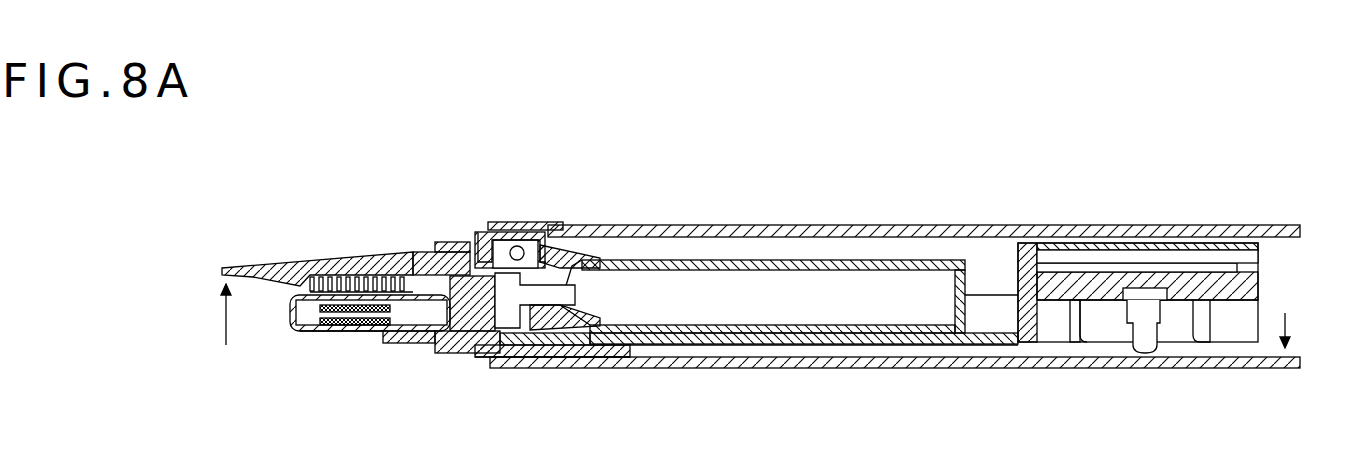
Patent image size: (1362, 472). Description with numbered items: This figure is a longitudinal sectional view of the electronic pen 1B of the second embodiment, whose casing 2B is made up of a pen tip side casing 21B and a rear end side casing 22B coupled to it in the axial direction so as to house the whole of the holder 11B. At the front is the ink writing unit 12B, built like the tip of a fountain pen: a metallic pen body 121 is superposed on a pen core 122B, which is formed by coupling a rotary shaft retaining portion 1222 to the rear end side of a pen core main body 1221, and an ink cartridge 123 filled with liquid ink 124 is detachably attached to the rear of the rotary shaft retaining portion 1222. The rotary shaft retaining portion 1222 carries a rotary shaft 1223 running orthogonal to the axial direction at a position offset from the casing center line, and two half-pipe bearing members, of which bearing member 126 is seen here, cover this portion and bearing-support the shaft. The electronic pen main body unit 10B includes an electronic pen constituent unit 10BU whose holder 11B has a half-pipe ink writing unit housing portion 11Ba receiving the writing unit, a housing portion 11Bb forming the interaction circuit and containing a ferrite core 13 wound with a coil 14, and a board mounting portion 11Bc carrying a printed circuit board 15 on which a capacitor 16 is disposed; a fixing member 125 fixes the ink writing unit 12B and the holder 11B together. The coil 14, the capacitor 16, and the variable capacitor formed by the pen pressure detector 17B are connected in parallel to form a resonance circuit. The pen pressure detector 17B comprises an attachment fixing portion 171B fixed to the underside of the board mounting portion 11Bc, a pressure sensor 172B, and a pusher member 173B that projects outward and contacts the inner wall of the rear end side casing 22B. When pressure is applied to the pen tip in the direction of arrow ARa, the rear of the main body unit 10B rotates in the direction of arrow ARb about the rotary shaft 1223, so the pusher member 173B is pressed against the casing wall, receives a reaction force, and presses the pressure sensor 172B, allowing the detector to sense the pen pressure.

The electronic pen 1B is at (894, 247).
The casing 2B is at (894, 181).
The pen tip side casing 21B is at (616, 237).
The rear end side casing 22B is at (728, 230).
The electronic pen main body unit 10B is at (1156, 314).
The electronic pen constituent unit 10BU is at (895, 345).
The holder 11B is at (690, 374).
The ink writing unit housing portion 11Ba is at (977, 323).
The housing portion 11Bb is at (362, 331).
The board mounting portion 11Bc is at (1070, 300).
The ink writing unit 12B is at (427, 208).
The pen body 121 is at (356, 256).
The pen core 122B is at (479, 235).
The pen core main body 1221 is at (436, 249).
The rotary shaft retaining portion 1222 is at (506, 248).
The ink cartridge 123 is at (549, 203).
The liquid ink 124 is at (748, 313).
The fixing member 125 is at (435, 350).
The bearing member 126 is at (475, 357).
The rotary shaft 1223 is at (512, 345).
The ferrite core 13 is at (344, 337).
The coil 14 is at (325, 331).
The printed circuit board 15 is at (1184, 268).
The capacitor 16 is at (1047, 260).
The pen pressure detector 17B is at (1187, 377).
The attachment fixing portion 171B is at (1236, 357).
The pressure sensor 172B is at (1120, 292).
The pusher member 173B is at (1146, 353).
The arrow ARa is at (220, 318).
The arrow ARb is at (1292, 342).